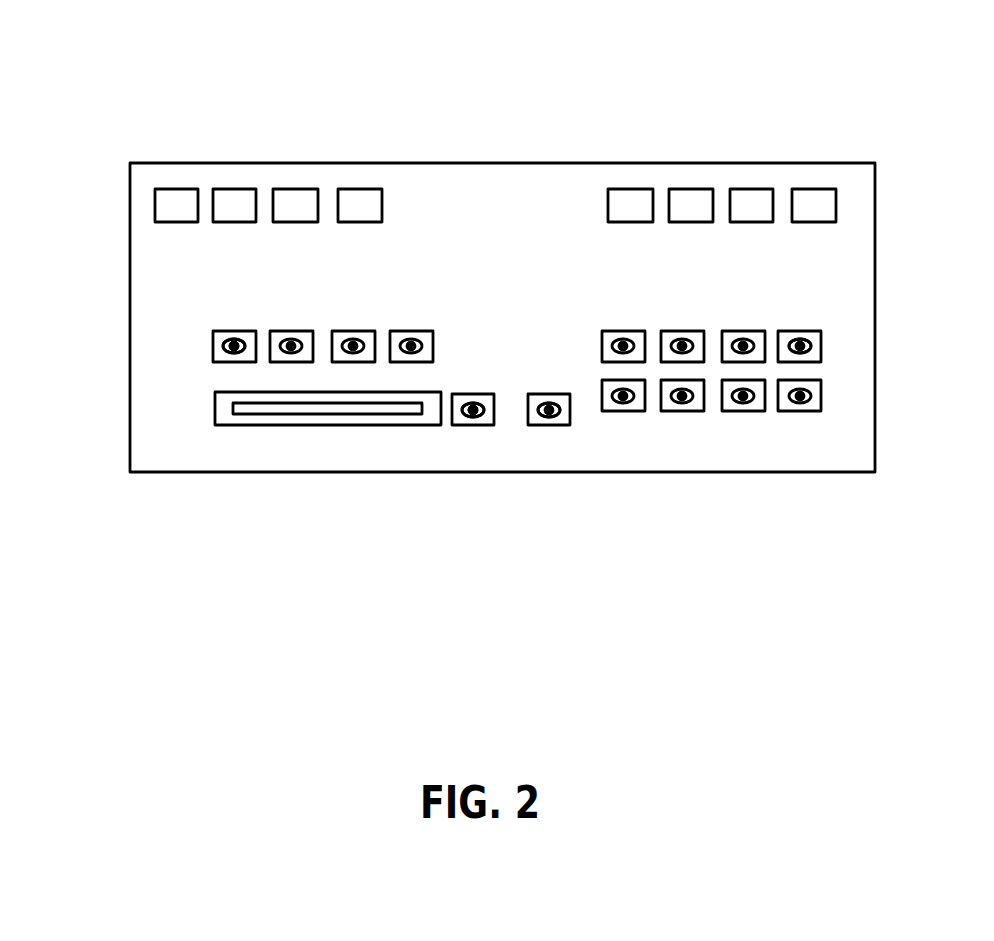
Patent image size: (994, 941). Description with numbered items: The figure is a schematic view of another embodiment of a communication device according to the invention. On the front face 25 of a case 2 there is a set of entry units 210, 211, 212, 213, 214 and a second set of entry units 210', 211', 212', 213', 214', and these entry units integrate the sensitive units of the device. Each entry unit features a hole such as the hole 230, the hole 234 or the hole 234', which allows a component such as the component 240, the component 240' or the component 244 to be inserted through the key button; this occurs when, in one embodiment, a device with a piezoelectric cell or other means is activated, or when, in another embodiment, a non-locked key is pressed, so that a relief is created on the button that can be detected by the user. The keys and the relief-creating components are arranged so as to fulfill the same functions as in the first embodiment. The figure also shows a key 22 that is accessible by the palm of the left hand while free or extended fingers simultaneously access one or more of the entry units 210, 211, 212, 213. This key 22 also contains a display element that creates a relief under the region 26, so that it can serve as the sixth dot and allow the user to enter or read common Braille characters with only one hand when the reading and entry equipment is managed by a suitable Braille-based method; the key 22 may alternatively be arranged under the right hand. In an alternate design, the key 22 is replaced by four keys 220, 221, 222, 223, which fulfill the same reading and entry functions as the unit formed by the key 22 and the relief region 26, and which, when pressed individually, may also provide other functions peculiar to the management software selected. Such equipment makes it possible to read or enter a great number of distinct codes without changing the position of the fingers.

The case 2 is at (288, 140).
The front face 25 is at (233, 177).
The key 22 is at (225, 415).
The display element relief area 26 is at (300, 413).
The entry unit 210 is at (157, 380).
The entry unit 211 is at (185, 329).
The entry unit 212 is at (220, 270).
The entry unit 213 is at (407, 240).
The entry unit 214 is at (473, 255).
The entry unit 210' is at (829, 229).
The entry unit 211' is at (776, 203).
The entry unit 212' is at (707, 201).
The entry unit 213' is at (623, 201).
The entry unit 214' is at (538, 230).
The key 220 is at (630, 412).
The key 221 is at (683, 412).
The key 222 is at (745, 412).
The key 223 is at (798, 412).
The hole 230 is at (230, 349).
The hole 234 is at (477, 482).
The hole 234' is at (565, 482).
The component 240 is at (155, 440).
The component 240' is at (866, 348).
The component 244 is at (472, 410).